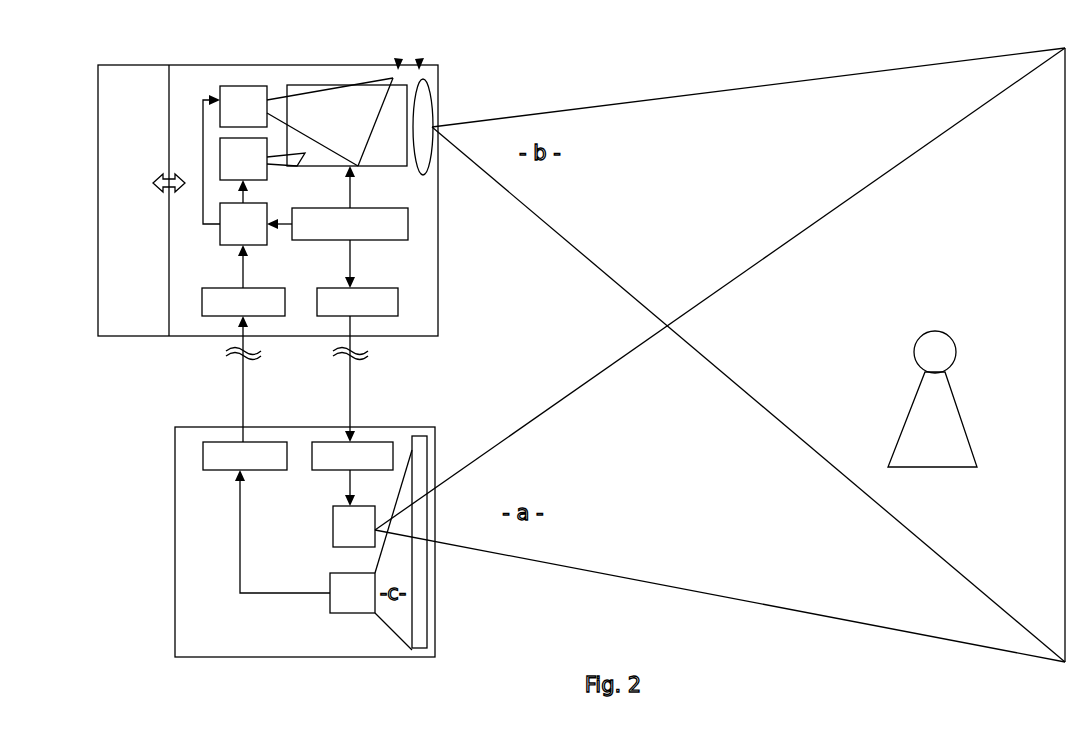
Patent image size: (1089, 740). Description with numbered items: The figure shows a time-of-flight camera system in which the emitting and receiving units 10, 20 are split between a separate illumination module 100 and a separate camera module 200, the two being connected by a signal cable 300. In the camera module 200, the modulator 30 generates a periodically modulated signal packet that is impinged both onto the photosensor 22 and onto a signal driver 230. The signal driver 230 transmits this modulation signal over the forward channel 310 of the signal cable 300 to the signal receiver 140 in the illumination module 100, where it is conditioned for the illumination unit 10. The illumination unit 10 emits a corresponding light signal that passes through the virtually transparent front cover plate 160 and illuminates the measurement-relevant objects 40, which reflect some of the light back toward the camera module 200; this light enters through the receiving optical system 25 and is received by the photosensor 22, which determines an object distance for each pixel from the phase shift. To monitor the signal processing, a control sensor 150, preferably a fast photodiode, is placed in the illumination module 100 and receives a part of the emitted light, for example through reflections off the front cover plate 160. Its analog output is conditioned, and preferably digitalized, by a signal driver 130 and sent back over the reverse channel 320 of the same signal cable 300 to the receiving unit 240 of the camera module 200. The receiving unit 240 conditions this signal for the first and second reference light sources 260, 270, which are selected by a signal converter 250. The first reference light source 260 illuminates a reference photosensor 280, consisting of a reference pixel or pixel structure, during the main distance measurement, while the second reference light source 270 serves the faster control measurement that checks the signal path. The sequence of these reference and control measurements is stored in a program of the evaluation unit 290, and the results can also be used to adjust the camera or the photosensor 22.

The camera module 200 is at (157, 62).
The evaluation unit 290 is at (147, 197).
The second reference light source 270 is at (306, 122).
The first reference light source 260 is at (243, 159).
The reference photosensor 280 is at (298, 166).
The signal converter 250 is at (235, 170).
The modulator 30 is at (337, 227).
The photosensor 22 is at (347, 122).
The receiving unit 20 is at (398, 66).
The receiving optical system 25 is at (424, 108).
The receiving unit 240 is at (243, 280).
The signal driver 230 is at (357, 302).
The transmission channel B (reverse channel) 320 is at (223, 379).
The transmission channel A (forward channel) 310 is at (374, 379).
The signal cable 300 is at (297, 375).
The illumination module 100 is at (172, 468).
The signal driver 130 is at (245, 456).
The signal receiver 140 is at (352, 474).
The illumination unit 10 is at (354, 526).
The control sensor 150 is at (323, 550).
The front cover plate 160 is at (421, 648).
The objects 40 is at (932, 399).